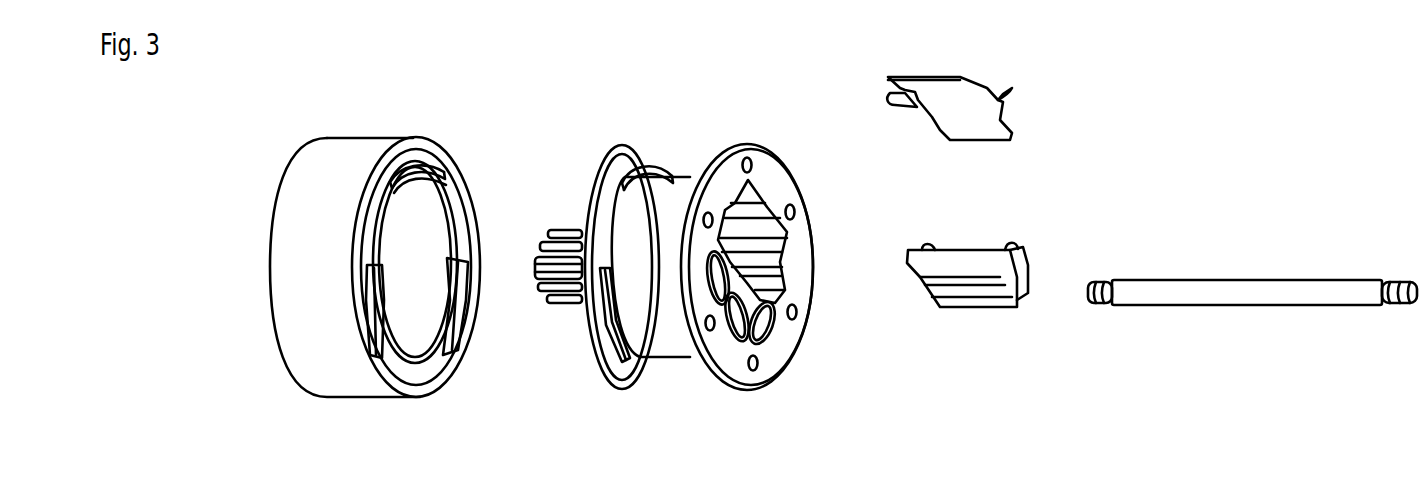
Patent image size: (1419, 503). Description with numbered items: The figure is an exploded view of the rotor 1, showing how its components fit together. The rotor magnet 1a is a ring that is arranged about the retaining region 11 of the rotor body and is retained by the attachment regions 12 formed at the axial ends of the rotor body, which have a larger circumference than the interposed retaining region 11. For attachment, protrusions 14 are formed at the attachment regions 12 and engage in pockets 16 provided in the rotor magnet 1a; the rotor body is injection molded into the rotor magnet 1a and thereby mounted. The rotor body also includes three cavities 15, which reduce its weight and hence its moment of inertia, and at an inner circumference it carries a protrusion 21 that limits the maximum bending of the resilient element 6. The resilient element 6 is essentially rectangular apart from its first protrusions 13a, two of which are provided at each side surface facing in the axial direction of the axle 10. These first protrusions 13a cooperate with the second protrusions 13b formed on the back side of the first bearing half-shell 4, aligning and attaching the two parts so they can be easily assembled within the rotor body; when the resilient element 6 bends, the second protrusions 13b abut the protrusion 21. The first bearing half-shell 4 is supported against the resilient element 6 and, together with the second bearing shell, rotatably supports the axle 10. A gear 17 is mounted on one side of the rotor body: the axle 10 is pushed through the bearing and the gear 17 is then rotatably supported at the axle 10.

The rotor 1 is at (272, 93).
The rotor magnet 1a is at (320, 322).
The pockets 16 is at (430, 166).
The protrusions 14 is at (578, 222).
The gear 17 is at (572, 307).
The retaining region 11 is at (652, 310).
The attachment region 12 is at (713, 148).
The protrusion 21 is at (768, 195).
The cavities 15 is at (717, 303).
The resilient element 6 is at (980, 123).
The first protrusions 13a is at (1000, 97).
The first bearing half-shell 4 is at (990, 287).
The second protrusions 13b is at (1010, 244).
The axle 10 is at (1245, 292).